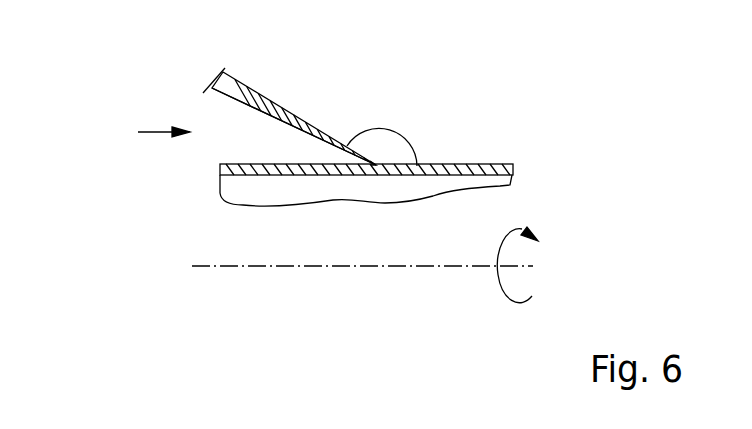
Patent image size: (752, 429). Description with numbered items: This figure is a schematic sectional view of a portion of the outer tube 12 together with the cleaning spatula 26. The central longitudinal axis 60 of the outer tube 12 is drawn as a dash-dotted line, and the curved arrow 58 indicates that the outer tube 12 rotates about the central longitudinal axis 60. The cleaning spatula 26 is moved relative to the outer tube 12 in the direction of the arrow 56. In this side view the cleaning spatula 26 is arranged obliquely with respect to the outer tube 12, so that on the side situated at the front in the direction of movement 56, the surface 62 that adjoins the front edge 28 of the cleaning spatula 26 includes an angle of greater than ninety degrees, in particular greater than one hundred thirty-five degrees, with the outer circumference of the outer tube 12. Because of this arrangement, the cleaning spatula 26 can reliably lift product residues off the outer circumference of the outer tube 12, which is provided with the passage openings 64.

The outer tube 12 is at (410, 190).
The cleaning spatula 26 is at (267, 108).
The front edge 28 is at (374, 163).
The arrow 56 is at (153, 130).
The curved arrow 58 is at (503, 300).
The central longitudinal axis 60 is at (238, 268).
The surface 62 is at (327, 130).
The passage openings 64 is at (453, 163).